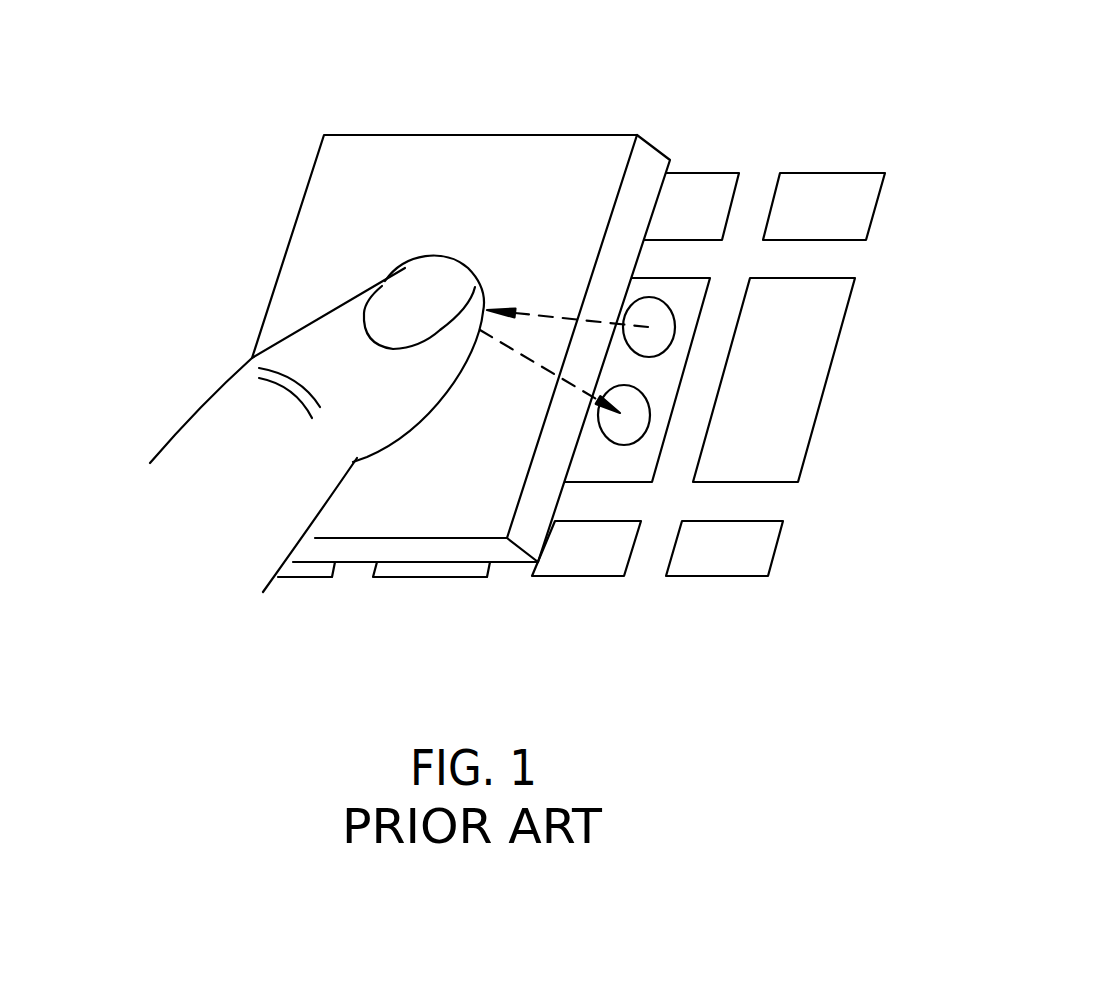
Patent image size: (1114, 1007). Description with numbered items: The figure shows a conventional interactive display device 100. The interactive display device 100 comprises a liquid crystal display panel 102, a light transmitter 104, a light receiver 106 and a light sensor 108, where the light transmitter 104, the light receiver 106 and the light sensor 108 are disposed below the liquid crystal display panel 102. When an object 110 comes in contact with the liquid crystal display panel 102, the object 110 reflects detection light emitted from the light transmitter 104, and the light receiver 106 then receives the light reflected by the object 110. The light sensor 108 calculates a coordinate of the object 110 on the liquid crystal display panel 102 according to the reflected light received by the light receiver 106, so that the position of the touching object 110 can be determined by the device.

The interactive display device 100 is at (931, 79).
The liquid crystal display panel 102 is at (557, 142).
The light transmitter 104 is at (655, 310).
The light receiver 106 is at (620, 430).
The light sensor 108 is at (576, 563).
The object 110 is at (210, 430).